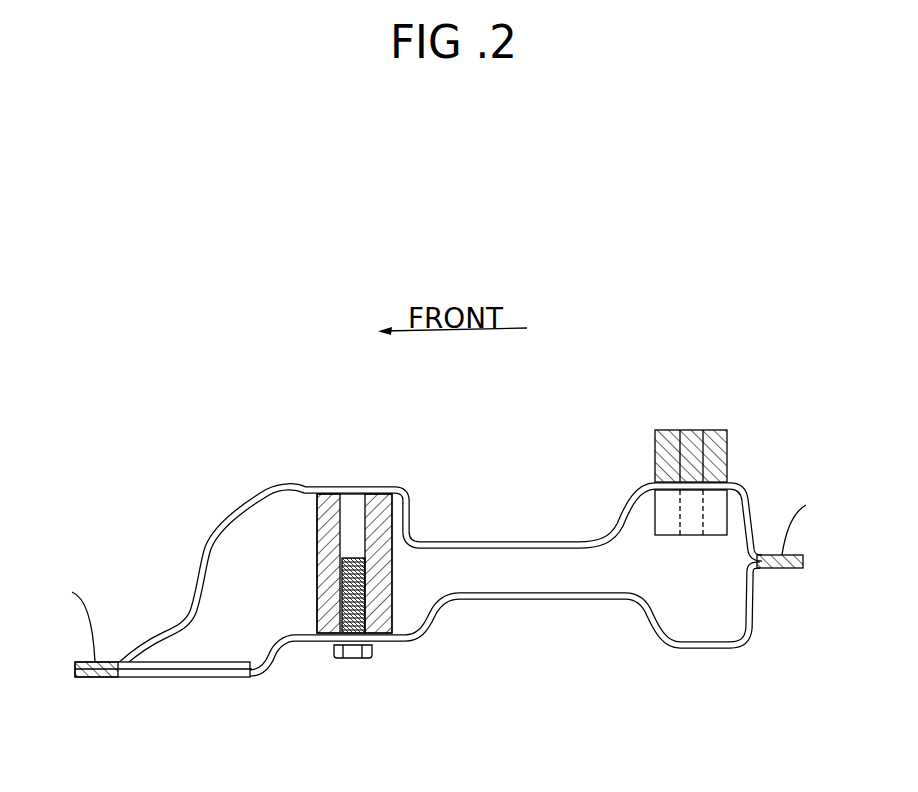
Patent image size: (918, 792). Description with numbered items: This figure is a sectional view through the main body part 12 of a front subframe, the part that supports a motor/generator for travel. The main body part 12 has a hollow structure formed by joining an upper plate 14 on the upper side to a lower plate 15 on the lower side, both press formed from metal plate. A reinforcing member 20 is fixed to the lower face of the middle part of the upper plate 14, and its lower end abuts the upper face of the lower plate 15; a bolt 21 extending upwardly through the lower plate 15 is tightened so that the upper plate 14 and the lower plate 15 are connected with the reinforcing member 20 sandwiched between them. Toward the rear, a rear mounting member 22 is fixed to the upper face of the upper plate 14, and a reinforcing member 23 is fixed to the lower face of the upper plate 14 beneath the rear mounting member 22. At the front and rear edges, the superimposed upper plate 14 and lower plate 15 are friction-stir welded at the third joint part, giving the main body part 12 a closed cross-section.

The main body part 12 is at (438, 540).
The upper plate 14 is at (505, 540).
The lower plate 15 is at (500, 602).
The reinforcing member 20 is at (323, 538).
The bolt 21 is at (352, 659).
The rear mounting member 22 is at (713, 431).
The reinforcing member 23 is at (713, 528).